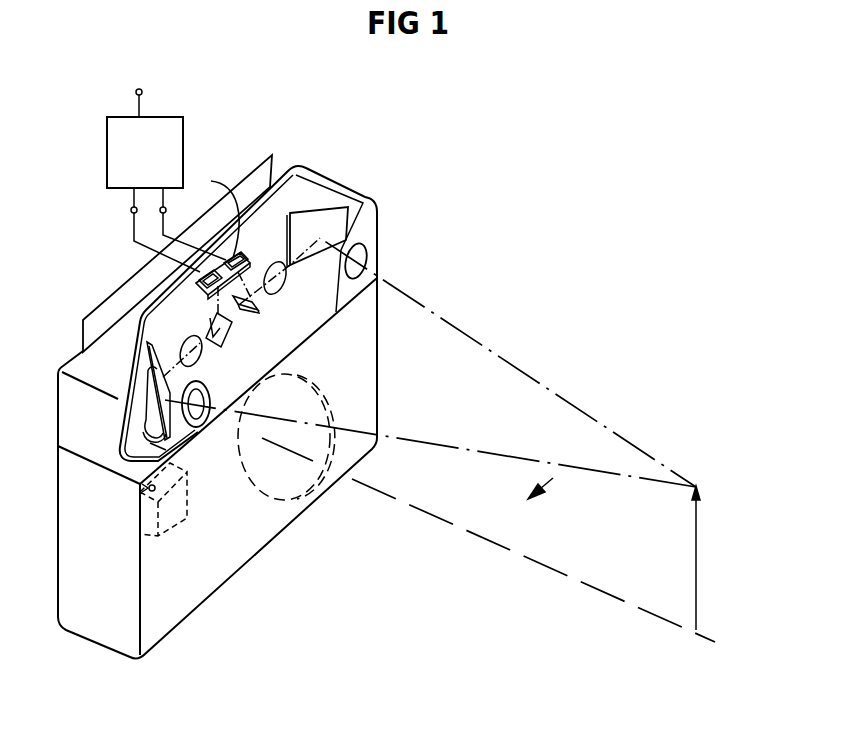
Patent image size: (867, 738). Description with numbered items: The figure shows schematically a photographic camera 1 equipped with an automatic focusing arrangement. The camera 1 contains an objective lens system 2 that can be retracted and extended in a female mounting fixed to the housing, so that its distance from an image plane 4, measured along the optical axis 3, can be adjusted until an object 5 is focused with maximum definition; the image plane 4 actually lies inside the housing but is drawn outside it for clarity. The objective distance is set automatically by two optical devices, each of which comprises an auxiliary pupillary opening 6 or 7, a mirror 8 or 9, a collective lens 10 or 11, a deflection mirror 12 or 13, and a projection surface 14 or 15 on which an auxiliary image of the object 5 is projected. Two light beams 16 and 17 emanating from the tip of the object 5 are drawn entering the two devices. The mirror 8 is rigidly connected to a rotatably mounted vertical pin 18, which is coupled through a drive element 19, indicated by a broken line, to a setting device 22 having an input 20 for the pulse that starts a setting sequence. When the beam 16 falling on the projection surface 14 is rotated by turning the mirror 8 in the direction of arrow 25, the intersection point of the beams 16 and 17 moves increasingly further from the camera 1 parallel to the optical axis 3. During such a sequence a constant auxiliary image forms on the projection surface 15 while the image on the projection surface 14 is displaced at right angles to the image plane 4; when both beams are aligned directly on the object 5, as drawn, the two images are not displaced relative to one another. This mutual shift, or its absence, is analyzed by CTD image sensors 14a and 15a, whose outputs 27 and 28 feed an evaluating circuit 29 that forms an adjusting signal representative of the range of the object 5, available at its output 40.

The camera 1 is at (168, 616).
The objective lens system 2 is at (278, 500).
The optical axis 3 is at (598, 590).
The image plane 4 is at (258, 178).
The object 5 is at (702, 558).
The auxiliary pupillary opening 6 is at (202, 391).
The auxiliary pupillary opening 7 is at (364, 248).
The mirror 8 is at (149, 348).
The mirror 9 is at (337, 208).
The collective lens 10 is at (201, 357).
The collective lens 11 is at (284, 287).
The deflection mirror 12 is at (214, 322).
The deflection mirror 13 is at (250, 308).
The projection surface 14 is at (194, 287).
The CTD image sensor 14a is at (197, 276).
The projection surface 15 is at (215, 210).
The CTD image sensor 15a is at (233, 262).
The light beam 16 is at (512, 458).
The light beam 17 is at (584, 412).
The vertical pin 18 is at (150, 405).
The drive element 19 is at (150, 443).
The input 20 is at (169, 544).
The setting device 22 is at (172, 522).
The arrow 25 is at (552, 493).
The output 27 is at (152, 230).
The output 28 is at (193, 224).
The evaluating circuit 29 is at (145, 152).
The output 40 is at (170, 97).